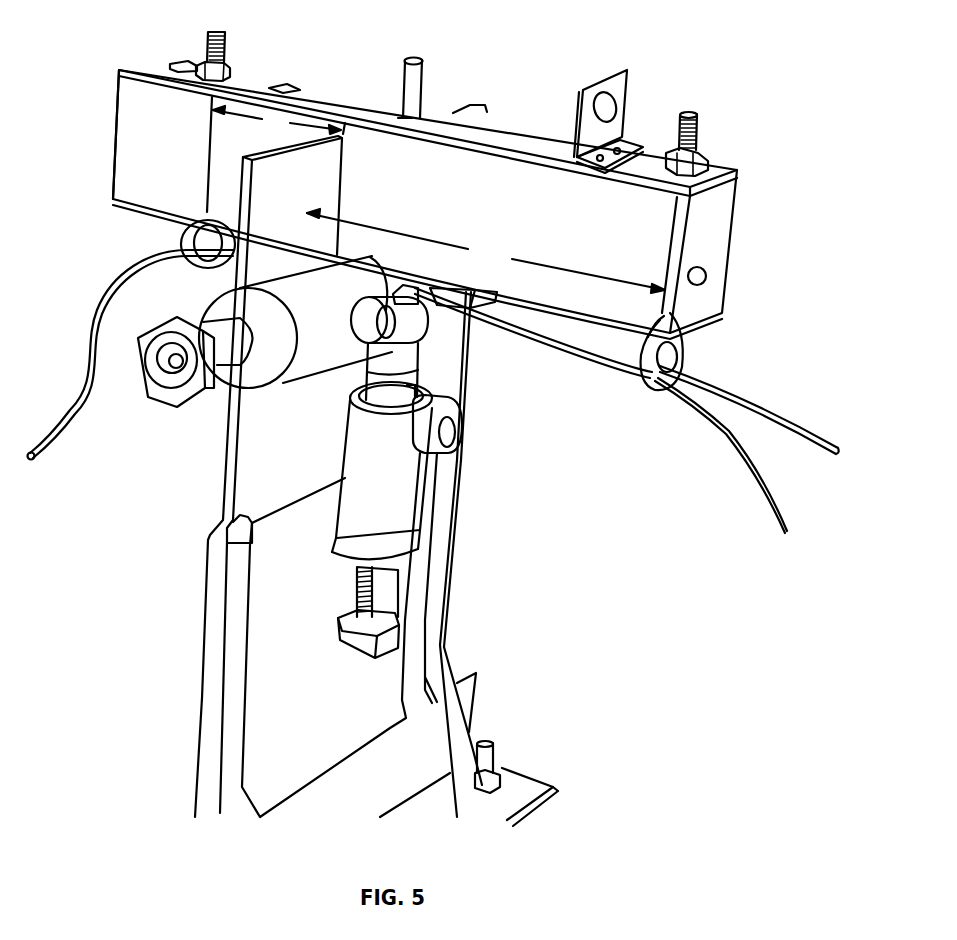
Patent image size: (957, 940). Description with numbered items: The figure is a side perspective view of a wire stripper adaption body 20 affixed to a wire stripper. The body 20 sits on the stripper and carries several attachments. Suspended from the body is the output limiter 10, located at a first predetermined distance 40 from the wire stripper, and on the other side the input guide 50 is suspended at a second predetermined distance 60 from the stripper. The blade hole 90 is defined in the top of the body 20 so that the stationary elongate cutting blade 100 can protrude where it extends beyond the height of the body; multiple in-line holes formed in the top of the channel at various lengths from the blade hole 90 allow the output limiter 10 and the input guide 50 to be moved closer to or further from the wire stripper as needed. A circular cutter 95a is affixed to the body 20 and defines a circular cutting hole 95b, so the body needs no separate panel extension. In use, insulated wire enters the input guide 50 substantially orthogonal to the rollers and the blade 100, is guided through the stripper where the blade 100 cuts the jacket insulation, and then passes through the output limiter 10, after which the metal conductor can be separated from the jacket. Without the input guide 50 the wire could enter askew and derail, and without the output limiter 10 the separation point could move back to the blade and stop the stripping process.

The output limiter 10 is at (697, 128).
The body 20 is at (438, 196).
The first predetermined distance 40 is at (486, 251).
The input guide 50 is at (225, 40).
The second predetermined distance 60 is at (276, 154).
The blade hole 90 is at (398, 116).
The circular cutter 95a is at (630, 90).
The circular cutting hole 95b is at (606, 100).
The elongate cutting blade 100 is at (413, 90).